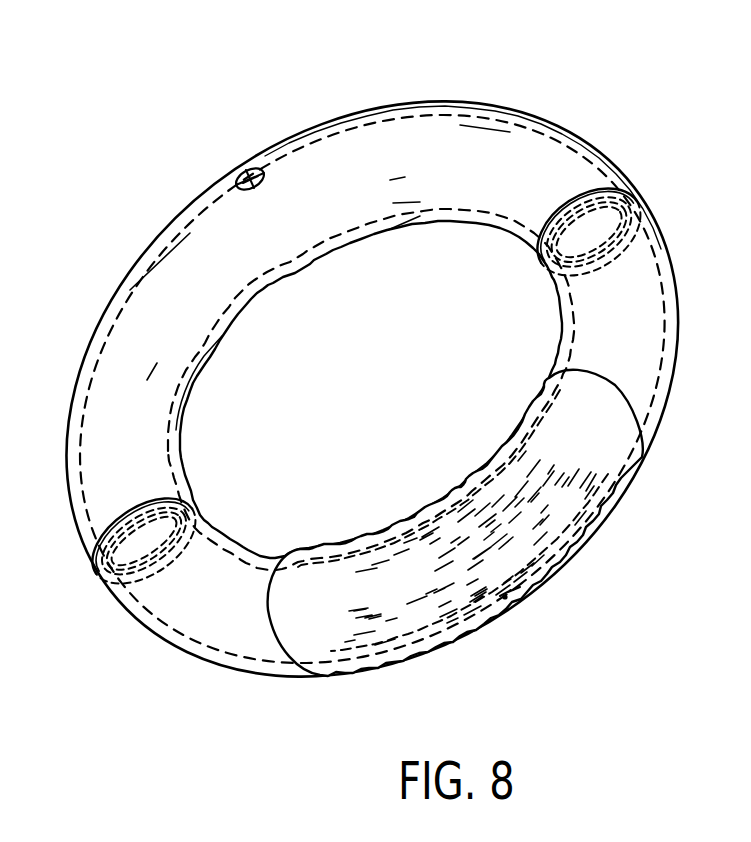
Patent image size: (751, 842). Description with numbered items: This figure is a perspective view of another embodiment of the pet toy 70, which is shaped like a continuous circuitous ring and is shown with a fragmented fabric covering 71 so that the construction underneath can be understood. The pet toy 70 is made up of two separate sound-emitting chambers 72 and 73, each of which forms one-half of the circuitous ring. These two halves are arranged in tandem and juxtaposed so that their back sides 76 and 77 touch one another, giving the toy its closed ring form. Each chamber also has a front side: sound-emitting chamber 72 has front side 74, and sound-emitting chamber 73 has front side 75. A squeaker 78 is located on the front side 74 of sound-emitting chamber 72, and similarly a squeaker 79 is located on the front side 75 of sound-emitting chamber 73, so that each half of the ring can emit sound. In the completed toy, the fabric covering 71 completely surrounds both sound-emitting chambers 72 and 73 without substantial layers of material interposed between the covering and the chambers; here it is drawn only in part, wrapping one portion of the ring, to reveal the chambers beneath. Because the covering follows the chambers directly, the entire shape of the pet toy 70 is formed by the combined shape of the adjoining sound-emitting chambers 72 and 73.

The pet toy 70 is at (533, 104).
The fabric covering 71 is at (583, 510).
The sound-emitting chamber 72 is at (113, 363).
The sound-emitting chamber 73 is at (645, 392).
The front side 74 is at (281, 164).
The front side 75 is at (417, 630).
The back side 76 is at (616, 162).
The back side 77 is at (612, 262).
The squeaker 78 is at (243, 180).
The squeaker 79 is at (515, 588).